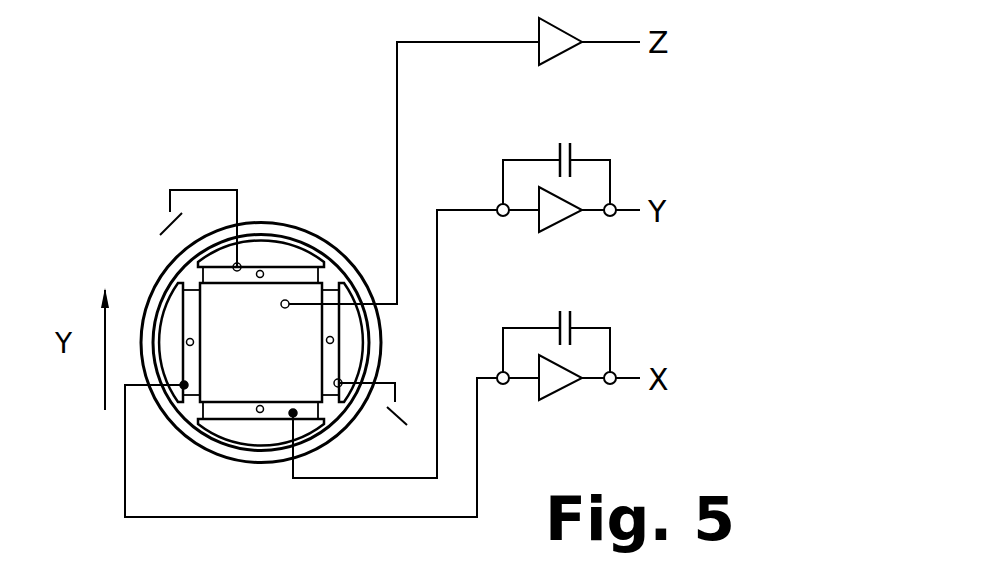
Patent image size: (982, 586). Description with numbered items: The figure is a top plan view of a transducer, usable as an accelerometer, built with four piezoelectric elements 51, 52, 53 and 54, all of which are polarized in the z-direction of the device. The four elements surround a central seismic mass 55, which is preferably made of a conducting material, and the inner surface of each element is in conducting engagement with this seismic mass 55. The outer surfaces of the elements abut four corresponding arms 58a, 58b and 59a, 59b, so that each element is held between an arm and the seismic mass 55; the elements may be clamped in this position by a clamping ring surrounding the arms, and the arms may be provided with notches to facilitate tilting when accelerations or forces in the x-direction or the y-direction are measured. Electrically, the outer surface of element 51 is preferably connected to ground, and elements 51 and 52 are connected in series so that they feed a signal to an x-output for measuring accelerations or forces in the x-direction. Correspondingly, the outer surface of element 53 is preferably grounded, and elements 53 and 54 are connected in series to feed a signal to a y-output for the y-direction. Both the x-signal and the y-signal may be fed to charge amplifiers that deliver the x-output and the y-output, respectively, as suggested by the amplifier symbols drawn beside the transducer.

The piezoelectric element 51 is at (330, 297).
The piezoelectric element 52 is at (192, 298).
The piezoelectric element 53 is at (292, 277).
The piezoelectric element 54 is at (212, 407).
The seismic mass 55 is at (298, 383).
The arm 58a is at (353, 343).
The arm 58b is at (168, 340).
The arm 59a is at (262, 248).
The arm 59b is at (248, 432).